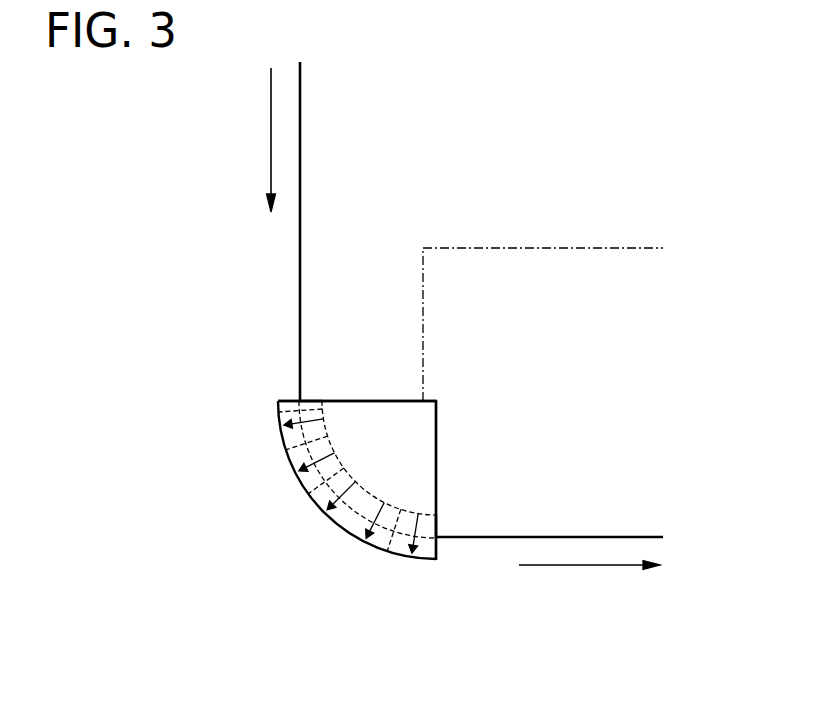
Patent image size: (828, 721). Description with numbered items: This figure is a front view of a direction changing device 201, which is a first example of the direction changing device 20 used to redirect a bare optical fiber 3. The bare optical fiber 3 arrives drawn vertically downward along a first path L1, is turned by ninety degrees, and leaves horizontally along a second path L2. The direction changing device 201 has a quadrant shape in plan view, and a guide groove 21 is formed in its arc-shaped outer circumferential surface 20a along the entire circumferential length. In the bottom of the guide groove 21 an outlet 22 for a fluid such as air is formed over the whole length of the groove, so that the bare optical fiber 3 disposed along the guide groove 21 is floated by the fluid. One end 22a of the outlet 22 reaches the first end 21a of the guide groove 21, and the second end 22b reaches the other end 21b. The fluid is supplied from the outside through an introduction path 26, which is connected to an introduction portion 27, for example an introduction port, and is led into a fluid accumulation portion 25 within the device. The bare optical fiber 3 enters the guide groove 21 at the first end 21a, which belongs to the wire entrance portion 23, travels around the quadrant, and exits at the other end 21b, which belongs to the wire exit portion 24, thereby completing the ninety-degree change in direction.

The bare optical fiber 3 is at (300, 131).
The first path L1 is at (300, 194).
The second path L2 is at (615, 537).
The introduction path 26 is at (618, 248).
The direction changing device 20 is at (376, 466).
The direction changing device 201 is at (376, 466).
The outer circumferential surface 20a is at (301, 483).
The introduction portion 27 is at (423, 400).
The fluid accumulation portion 25 is at (397, 440).
The wire entrance portion 23 is at (283, 408).
The guide groove 21 is at (374, 497).
The outlet 22 is at (390, 507).
The wire exit portion 24 is at (424, 508).
The first end of the guide groove 21a is at (357, 350).
The one end of the outlet 22a is at (322, 400).
The other end of the guide groove 21b is at (503, 563).
The second end of the outlet 22b is at (437, 513).